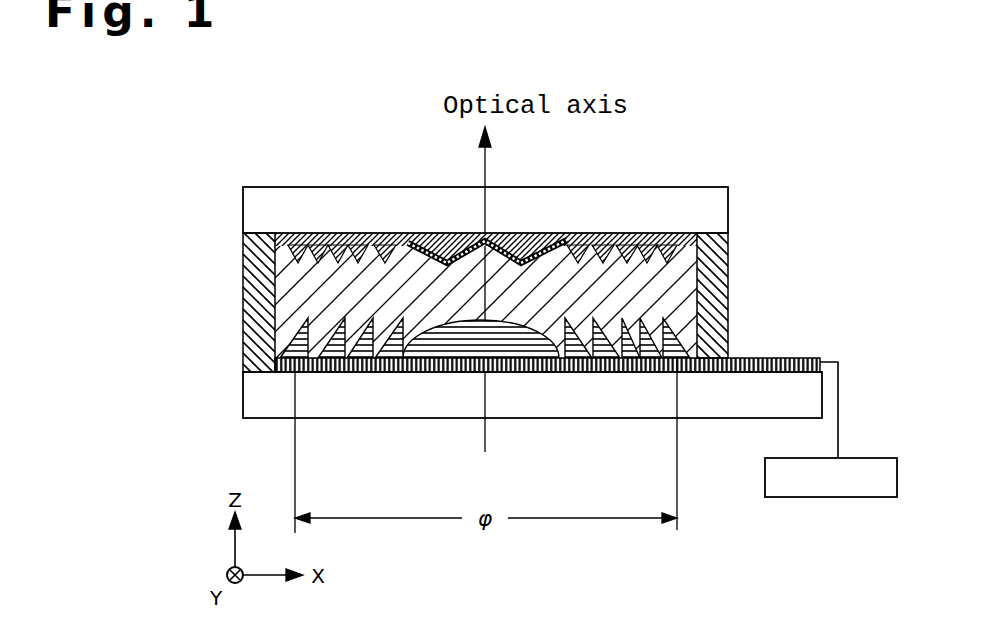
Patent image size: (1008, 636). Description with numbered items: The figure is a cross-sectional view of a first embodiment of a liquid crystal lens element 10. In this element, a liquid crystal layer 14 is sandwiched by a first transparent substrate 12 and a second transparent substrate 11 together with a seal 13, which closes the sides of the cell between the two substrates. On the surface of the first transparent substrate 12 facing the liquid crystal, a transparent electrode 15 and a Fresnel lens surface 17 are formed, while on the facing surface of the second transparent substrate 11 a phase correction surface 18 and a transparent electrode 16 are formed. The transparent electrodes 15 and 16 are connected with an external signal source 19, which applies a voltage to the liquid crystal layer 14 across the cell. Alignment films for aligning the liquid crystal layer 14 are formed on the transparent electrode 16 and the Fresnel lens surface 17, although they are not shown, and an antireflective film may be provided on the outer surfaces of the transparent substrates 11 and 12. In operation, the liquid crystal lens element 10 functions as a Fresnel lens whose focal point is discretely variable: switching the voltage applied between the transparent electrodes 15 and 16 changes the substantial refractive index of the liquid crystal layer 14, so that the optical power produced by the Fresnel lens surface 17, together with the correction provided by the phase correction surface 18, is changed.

The liquid crystal lens element 10 is at (172, 105).
The second transparent substrate 11 is at (278, 212).
The first transparent substrate 12 is at (278, 403).
The seal 13 is at (245, 313).
The liquid crystal layer 14 is at (300, 288).
The transparent electrode 15 is at (432, 373).
The transparent electrode 16 is at (438, 243).
The Fresnel lens surface 17 is at (502, 343).
The phase correction surface 18 is at (390, 240).
The external signal source 19 is at (765, 474).